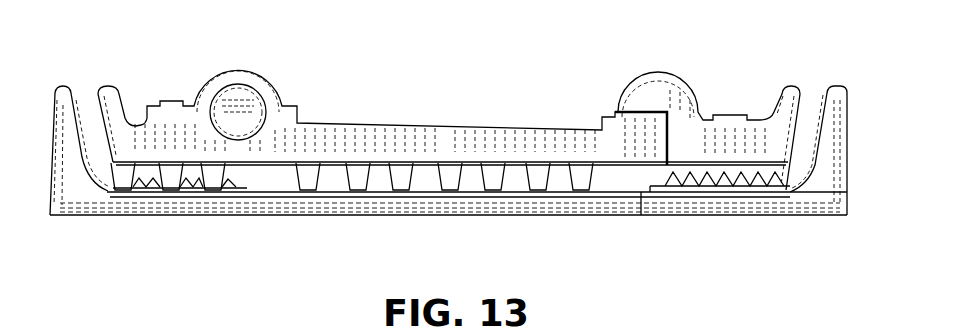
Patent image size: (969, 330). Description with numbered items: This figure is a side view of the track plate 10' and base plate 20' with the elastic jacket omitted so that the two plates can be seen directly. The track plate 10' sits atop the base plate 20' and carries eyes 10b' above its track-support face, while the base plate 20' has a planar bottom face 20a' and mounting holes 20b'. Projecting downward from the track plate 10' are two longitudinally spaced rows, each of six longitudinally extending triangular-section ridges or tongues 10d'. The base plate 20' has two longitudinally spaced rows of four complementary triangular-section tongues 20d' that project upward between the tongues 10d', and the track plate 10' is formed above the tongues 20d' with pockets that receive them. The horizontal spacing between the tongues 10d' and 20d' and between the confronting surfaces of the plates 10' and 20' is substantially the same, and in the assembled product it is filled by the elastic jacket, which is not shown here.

The track plate 10' is at (449, 127).
The eyes 10b' is at (502, 76).
The triangular-section ridges or tongues 10d' is at (352, 215).
The base plate 20' is at (135, 189).
The planar bottom face 20a' is at (448, 241).
The mounting holes 20b' is at (834, 125).
The complementary triangular-section ridges or tongues 20d' is at (451, 225).